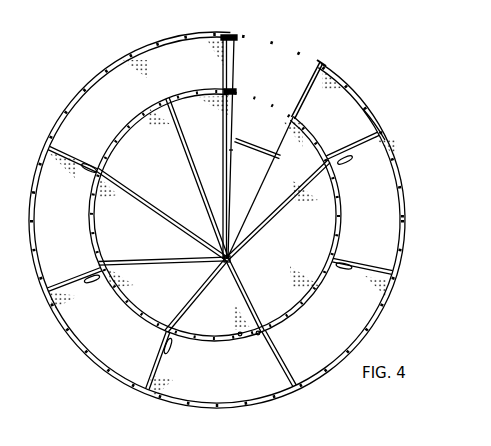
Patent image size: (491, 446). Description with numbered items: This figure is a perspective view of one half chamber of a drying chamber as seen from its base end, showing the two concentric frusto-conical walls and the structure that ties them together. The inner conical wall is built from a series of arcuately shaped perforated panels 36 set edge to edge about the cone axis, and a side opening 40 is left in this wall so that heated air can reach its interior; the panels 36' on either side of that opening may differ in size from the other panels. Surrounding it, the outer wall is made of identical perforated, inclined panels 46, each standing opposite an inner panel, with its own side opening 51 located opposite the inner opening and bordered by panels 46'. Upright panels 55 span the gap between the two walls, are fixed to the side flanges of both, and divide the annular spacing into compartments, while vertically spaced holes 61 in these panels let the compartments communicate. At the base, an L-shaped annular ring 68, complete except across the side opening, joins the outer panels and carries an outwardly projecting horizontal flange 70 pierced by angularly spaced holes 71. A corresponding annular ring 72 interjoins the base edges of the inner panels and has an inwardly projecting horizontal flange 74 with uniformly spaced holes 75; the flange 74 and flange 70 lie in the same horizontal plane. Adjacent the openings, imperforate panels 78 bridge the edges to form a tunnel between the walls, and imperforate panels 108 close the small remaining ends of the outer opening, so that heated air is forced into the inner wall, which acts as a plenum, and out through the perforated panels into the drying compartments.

The perforated panels 36 is at (207, 221).
The panels on opposite sides of the opening 36' is at (248, 178).
The side opening 40 is at (232, 152).
The perforated and inclined panels 46 is at (191, 229).
The panels on opposite sides of the opening 46' is at (283, 99).
The side opening 51 is at (272, 74).
The upright panels 55 is at (360, 152).
The holes 61 is at (96, 283).
The annular ring 68 is at (380, 114).
The horizontal flange 70 is at (403, 177).
The holes 71 is at (404, 256).
The annular ring 72 is at (318, 288).
The horizontal flange 74 is at (340, 238).
The holes 75 is at (258, 336).
The imperforate panels 78 is at (231, 113).
The imperforate panels 108 is at (254, 174).